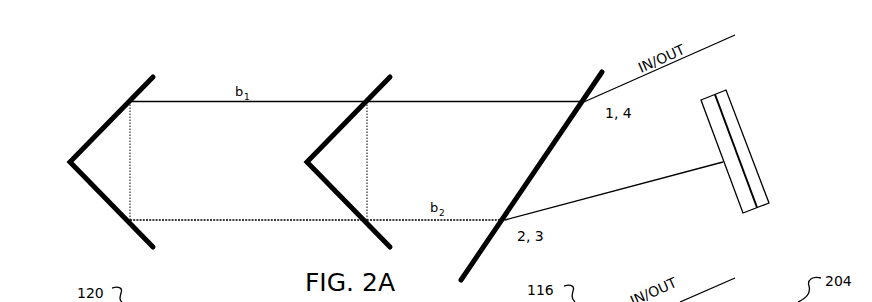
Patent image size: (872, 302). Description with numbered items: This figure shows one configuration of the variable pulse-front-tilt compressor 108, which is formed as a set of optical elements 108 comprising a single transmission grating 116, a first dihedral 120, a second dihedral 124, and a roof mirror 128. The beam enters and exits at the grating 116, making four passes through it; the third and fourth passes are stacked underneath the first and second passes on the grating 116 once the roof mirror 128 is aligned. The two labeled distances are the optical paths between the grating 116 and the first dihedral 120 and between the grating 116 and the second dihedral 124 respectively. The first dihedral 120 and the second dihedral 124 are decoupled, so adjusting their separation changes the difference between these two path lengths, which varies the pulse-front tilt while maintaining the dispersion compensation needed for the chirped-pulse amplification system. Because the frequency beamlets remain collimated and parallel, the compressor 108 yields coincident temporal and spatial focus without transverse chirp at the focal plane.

The first optical element or set of optical elements 108 is at (800, 66).
The transmission grating 116 is at (587, 87).
The first dihedral 120 is at (147, 83).
The second dihedral 124 is at (378, 83).
The roof mirror 128 is at (738, 150).